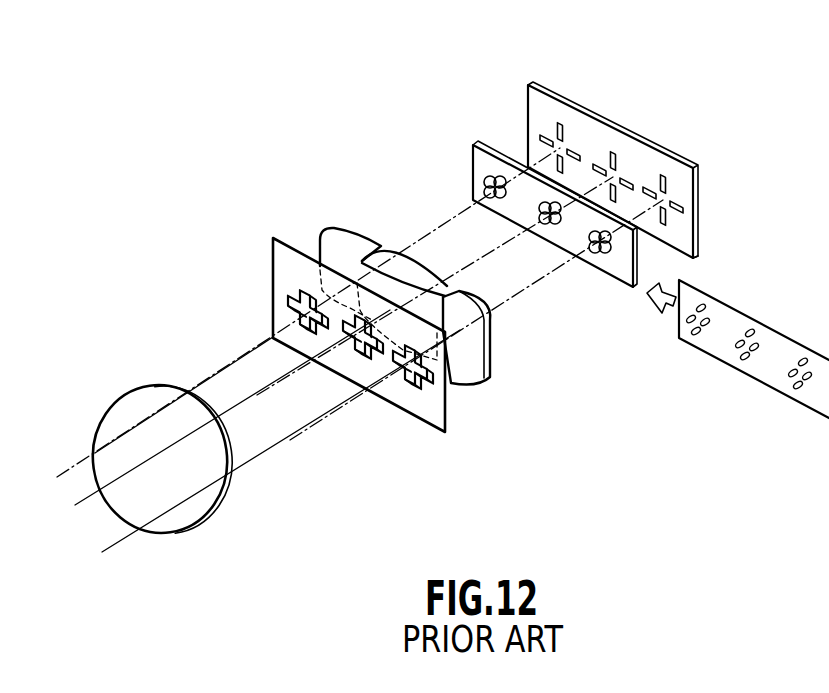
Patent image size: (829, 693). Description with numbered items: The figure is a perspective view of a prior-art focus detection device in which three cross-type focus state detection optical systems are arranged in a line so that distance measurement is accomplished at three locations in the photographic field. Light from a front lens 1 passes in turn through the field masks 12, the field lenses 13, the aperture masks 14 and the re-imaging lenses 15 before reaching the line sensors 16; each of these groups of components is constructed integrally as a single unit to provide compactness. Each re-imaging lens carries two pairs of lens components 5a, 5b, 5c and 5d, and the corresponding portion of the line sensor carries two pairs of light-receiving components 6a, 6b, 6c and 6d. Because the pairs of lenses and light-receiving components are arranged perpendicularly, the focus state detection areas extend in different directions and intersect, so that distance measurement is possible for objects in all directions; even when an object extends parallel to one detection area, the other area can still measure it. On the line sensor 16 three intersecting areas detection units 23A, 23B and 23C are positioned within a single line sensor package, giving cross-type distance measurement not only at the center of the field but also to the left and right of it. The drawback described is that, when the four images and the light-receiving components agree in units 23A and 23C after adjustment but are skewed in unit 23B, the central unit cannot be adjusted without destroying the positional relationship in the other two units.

The lens 1 is at (122, 405).
The field masks 12 is at (427, 410).
The field lenses 13 is at (497, 365).
The aperture masks 14 is at (767, 367).
The re-imaging lenses 15 is at (518, 188).
The line sensors 16 is at (632, 134).
The lens component 5a is at (499, 178).
The lens component 5b is at (495, 197).
The lens component 5c is at (490, 185).
The lens component 5d is at (505, 195).
The light-receiving component 6a is at (633, 171).
The light-receiving component 6b is at (700, 253).
The light-receiving component 6c is at (604, 150).
The light-receiving component 6d is at (665, 177).
The intersecting areas detection unit 23A is at (681, 124).
The intersecting areas detection unit 23B is at (710, 133).
The intersecting areas detection unit 23C is at (575, 133).